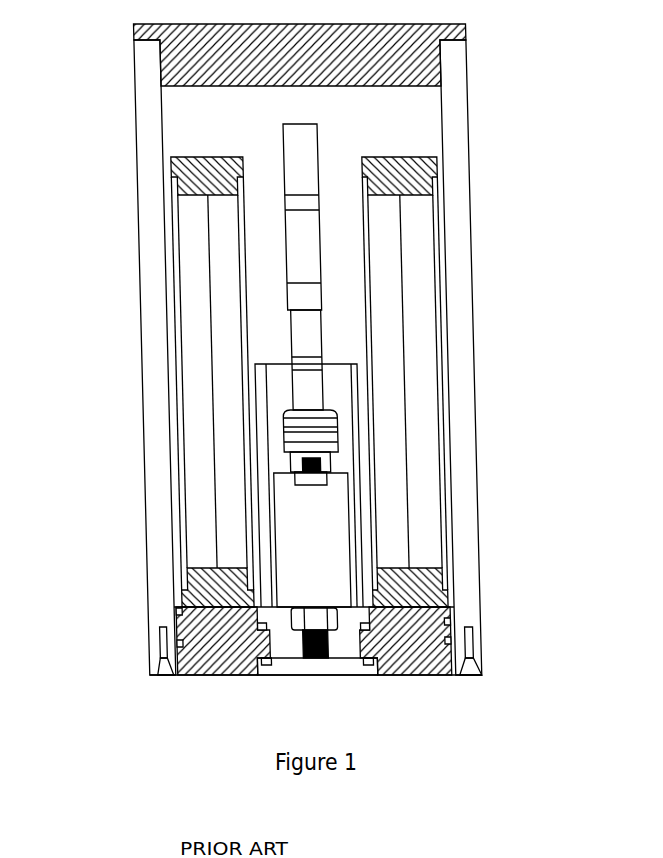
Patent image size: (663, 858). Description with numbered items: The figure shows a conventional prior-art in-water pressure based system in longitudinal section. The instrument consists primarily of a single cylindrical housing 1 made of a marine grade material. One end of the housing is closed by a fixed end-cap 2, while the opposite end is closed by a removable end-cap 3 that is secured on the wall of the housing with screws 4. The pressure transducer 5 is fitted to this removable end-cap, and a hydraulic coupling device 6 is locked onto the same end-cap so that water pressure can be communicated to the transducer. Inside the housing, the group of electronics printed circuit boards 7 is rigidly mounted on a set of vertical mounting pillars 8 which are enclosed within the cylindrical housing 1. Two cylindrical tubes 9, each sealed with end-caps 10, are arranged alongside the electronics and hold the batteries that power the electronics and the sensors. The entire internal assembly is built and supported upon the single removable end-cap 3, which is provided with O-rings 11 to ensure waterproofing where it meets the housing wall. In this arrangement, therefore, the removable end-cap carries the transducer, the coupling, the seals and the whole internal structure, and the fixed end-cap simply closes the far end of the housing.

The cylindrical housing 1 is at (472, 138).
The fixed end-cap 2 is at (412, 58).
The removable end-cap 3 is at (455, 608).
The screws 4 is at (150, 670).
The pressure transducer 5 is at (335, 507).
The hydraulic coupling device 6 is at (424, 653).
The electronics printed circuit boards 7 is at (288, 283).
The vertical mounting pillars 8 is at (300, 219).
The cylindrical tubes 9 is at (180, 365).
The end-caps 10 is at (172, 168).
The O-rings 11 is at (389, 627).